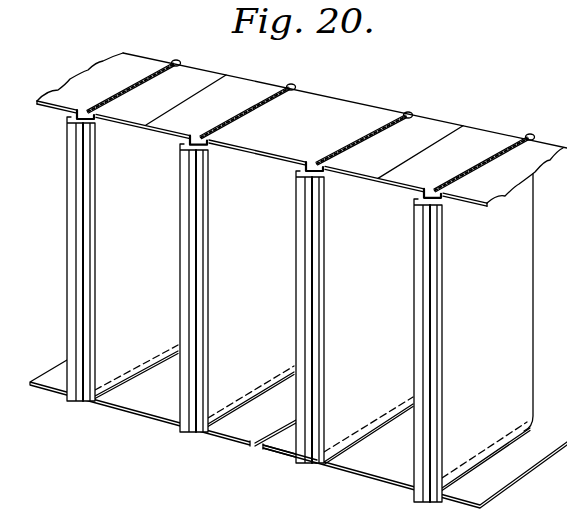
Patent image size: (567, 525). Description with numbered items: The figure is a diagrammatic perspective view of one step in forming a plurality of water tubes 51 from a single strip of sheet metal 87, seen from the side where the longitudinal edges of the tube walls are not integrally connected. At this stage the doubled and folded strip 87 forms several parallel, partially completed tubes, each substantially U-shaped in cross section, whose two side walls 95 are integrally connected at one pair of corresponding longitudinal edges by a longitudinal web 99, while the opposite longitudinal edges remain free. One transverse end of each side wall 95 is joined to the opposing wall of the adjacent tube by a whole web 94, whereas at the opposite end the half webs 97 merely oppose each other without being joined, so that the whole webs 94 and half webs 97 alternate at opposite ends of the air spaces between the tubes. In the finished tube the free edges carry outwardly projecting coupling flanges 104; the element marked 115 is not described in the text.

The whole web 94 is at (60, 101).
The half web 97 is at (510, 505).
The longitudinal web 99 is at (292, 88).
The water tube 51 is at (95, 107).
The side wall 95 is at (263, 321).
The coupling flange 104 is at (77, 283).
The strip of sheet metal 87 is at (290, 464).
The wall section 115 is at (543, 268).